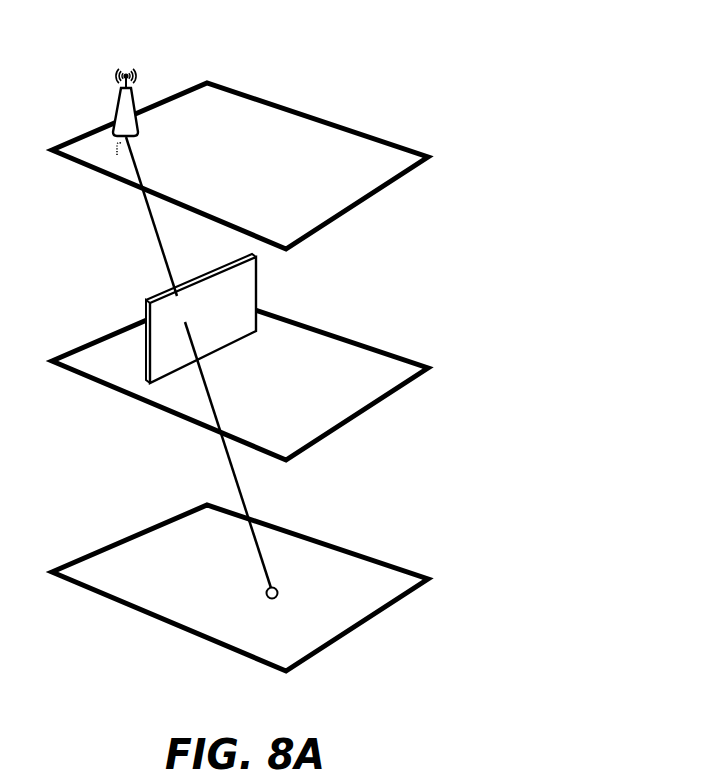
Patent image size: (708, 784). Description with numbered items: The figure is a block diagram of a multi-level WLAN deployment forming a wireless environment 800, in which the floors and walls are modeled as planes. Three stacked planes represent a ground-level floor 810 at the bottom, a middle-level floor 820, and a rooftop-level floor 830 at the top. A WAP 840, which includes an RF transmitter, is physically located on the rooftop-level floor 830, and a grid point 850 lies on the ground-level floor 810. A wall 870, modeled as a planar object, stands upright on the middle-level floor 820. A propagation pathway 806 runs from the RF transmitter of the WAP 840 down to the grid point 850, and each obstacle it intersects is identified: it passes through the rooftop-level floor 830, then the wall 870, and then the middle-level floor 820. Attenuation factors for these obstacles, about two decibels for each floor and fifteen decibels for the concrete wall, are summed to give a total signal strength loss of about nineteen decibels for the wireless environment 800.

The wireless environment 800 is at (590, 67).
The propagation pathway 806 is at (246, 494).
The ground-level floor 810 is at (433, 580).
The middle-level floor 820 is at (433, 369).
The rooftop-level floor 830 is at (433, 157).
The WAP 840 is at (137, 75).
The grid point 850 is at (271, 599).
The wall 870 is at (186, 322).